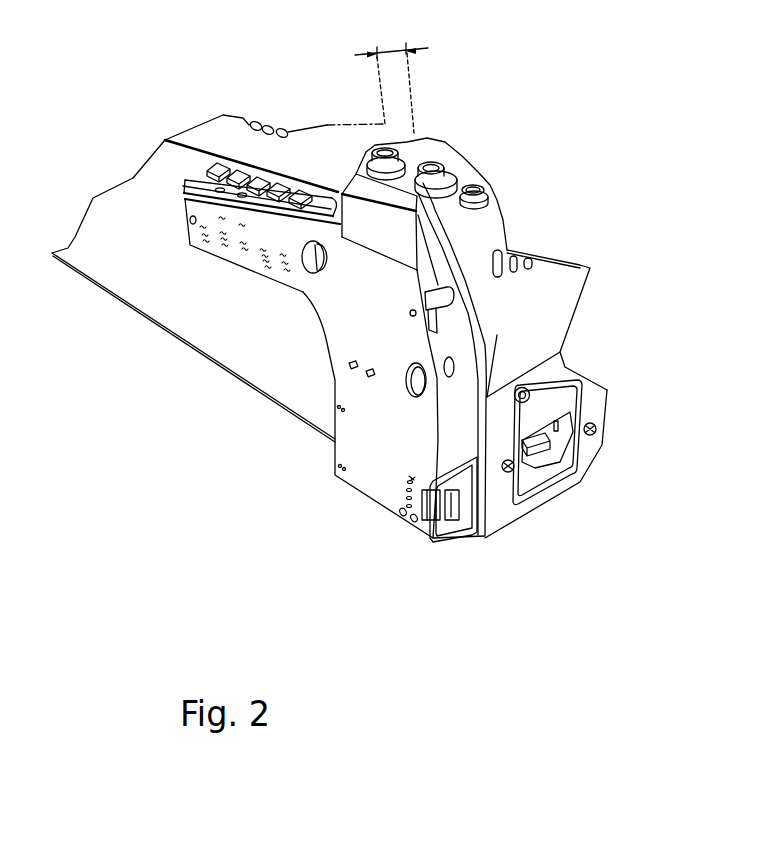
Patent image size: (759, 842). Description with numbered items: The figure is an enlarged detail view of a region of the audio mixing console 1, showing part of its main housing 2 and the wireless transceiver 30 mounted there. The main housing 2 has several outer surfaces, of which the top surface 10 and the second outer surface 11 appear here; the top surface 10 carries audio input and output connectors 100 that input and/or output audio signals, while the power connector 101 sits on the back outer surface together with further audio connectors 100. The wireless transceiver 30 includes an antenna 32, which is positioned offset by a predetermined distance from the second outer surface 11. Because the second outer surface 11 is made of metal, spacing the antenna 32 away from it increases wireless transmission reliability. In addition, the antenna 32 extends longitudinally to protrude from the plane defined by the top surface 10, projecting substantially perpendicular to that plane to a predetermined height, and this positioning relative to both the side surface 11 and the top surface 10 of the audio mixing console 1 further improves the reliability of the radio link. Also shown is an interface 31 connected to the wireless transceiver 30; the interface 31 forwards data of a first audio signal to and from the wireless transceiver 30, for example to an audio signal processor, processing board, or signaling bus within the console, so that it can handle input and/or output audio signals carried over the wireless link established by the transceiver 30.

The audio mixing console 1 is at (138, 367).
The main housing 2 is at (227, 323).
The top surface 10 is at (320, 147).
The second outer surface 11 is at (110, 257).
The wireless transceiver 30 is at (358, 328).
The interface 31 is at (265, 180).
The antenna 32 is at (405, 226).
The audio input and output connectors 100 is at (422, 155).
The power connector 101 is at (548, 453).